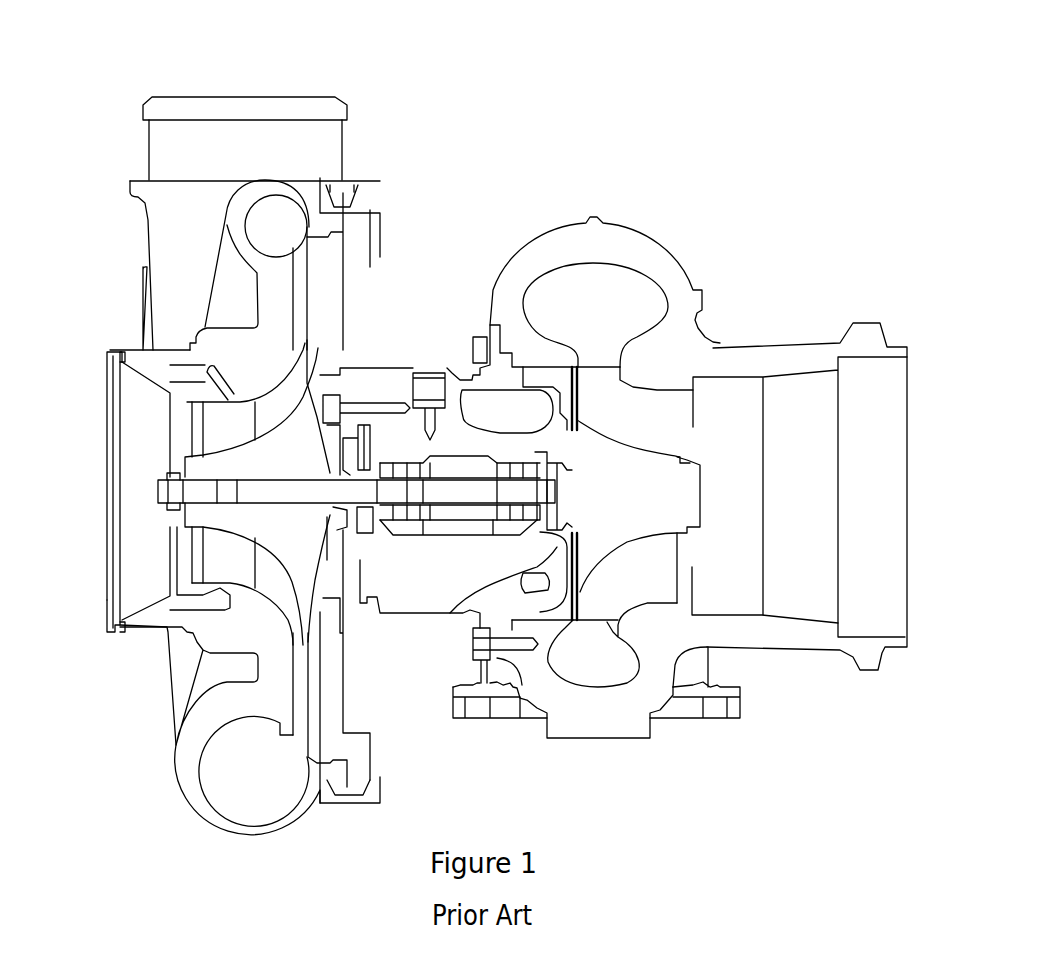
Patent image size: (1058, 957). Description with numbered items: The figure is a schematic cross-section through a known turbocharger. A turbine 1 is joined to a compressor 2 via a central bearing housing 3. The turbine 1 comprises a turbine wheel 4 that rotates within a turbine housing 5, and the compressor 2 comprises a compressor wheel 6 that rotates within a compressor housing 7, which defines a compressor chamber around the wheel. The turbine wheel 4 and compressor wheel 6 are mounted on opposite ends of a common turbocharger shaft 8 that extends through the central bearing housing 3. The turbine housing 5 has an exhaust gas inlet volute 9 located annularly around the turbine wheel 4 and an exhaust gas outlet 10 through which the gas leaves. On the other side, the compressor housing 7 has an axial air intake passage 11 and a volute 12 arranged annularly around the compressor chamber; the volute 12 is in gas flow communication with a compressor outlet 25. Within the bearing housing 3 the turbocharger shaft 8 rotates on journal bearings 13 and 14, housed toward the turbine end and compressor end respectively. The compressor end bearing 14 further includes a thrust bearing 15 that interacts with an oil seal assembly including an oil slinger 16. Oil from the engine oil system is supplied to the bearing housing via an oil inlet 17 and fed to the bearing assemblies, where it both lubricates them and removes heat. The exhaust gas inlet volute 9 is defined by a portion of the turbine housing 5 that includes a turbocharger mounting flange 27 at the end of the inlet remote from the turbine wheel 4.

The turbine 1 is at (807, 327).
The compressor 2 is at (143, 678).
The central bearing housing 3 is at (390, 385).
The turbine wheel 4 is at (593, 553).
The turbine housing 5 is at (800, 637).
The compressor wheel 6 is at (177, 515).
The compressor housing 7 is at (218, 340).
The turbocharger shaft 8 is at (450, 490).
The exhaust gas inlet volute 9 is at (613, 285).
The exhaust gas outlet 10 is at (803, 435).
The axial air intake passage 11 is at (150, 438).
The volute 12 is at (282, 213).
The journal bearing 13 is at (518, 380).
The journal bearing 14 is at (352, 482).
The thrust bearing 15 is at (360, 455).
The oil slinger 16 is at (298, 630).
The oil inlet 17 is at (433, 367).
The compressor outlet 25 is at (236, 97).
The turbocharger mounting flange 27 is at (677, 705).